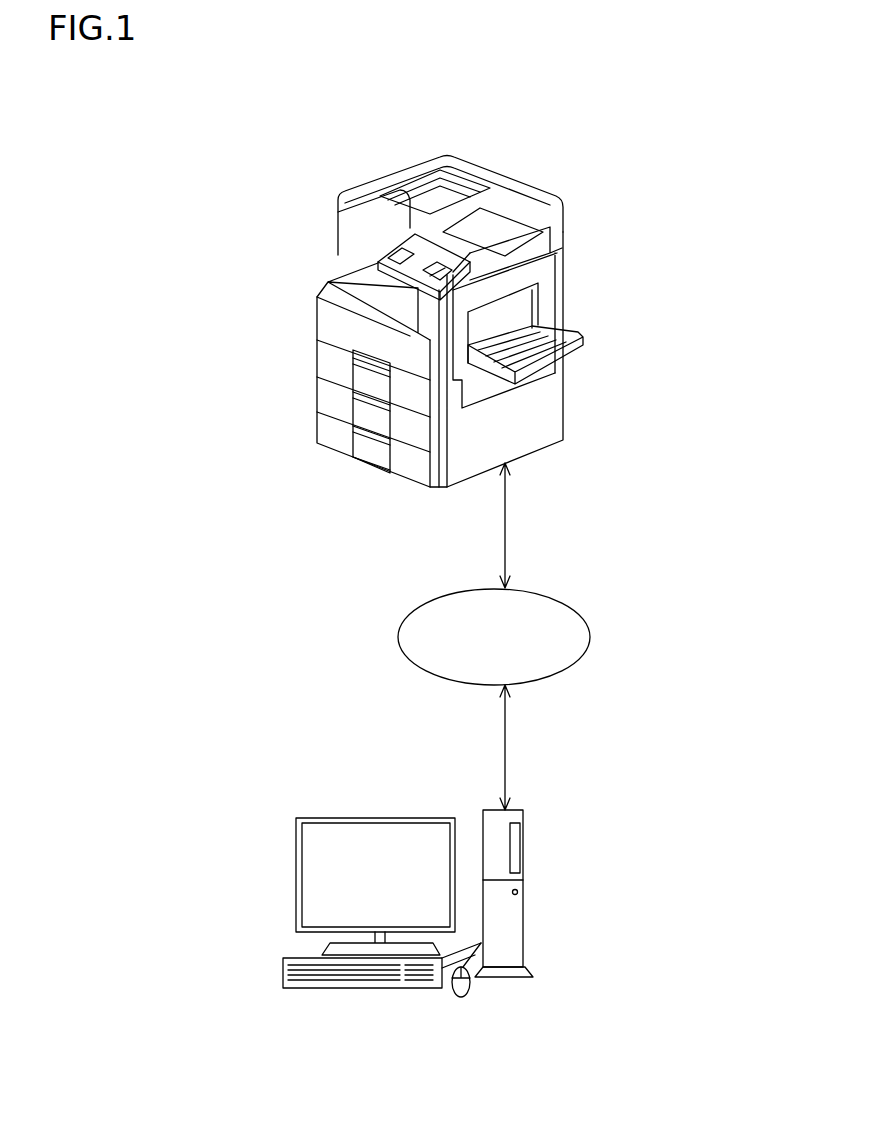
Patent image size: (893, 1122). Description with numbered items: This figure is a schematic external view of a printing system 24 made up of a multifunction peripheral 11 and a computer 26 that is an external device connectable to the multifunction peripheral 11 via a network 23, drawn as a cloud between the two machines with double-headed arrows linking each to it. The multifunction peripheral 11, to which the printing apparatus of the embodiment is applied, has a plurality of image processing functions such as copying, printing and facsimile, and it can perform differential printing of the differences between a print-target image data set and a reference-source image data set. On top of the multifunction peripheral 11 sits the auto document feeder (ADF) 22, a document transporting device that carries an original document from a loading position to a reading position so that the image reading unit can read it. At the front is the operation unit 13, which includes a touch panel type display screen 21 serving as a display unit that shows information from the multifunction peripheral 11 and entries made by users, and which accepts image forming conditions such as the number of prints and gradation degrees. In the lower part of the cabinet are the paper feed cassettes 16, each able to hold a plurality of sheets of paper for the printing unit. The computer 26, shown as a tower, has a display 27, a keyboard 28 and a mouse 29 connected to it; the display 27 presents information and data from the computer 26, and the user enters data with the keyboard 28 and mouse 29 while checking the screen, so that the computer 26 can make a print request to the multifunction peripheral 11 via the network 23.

The multifunction peripheral 11 is at (602, 301).
The operation unit 13 is at (383, 254).
The paper feed cassettes 16 is at (283, 333).
The touch panel type display screen 21 is at (375, 258).
The auto document feeder (ADF) 22 is at (472, 173).
The network 23 is at (585, 620).
The printing system 24 is at (723, 181).
The computer 26 is at (503, 978).
The display 27 is at (353, 817).
The keyboard 28 is at (303, 989).
The mouse 29 is at (463, 997).